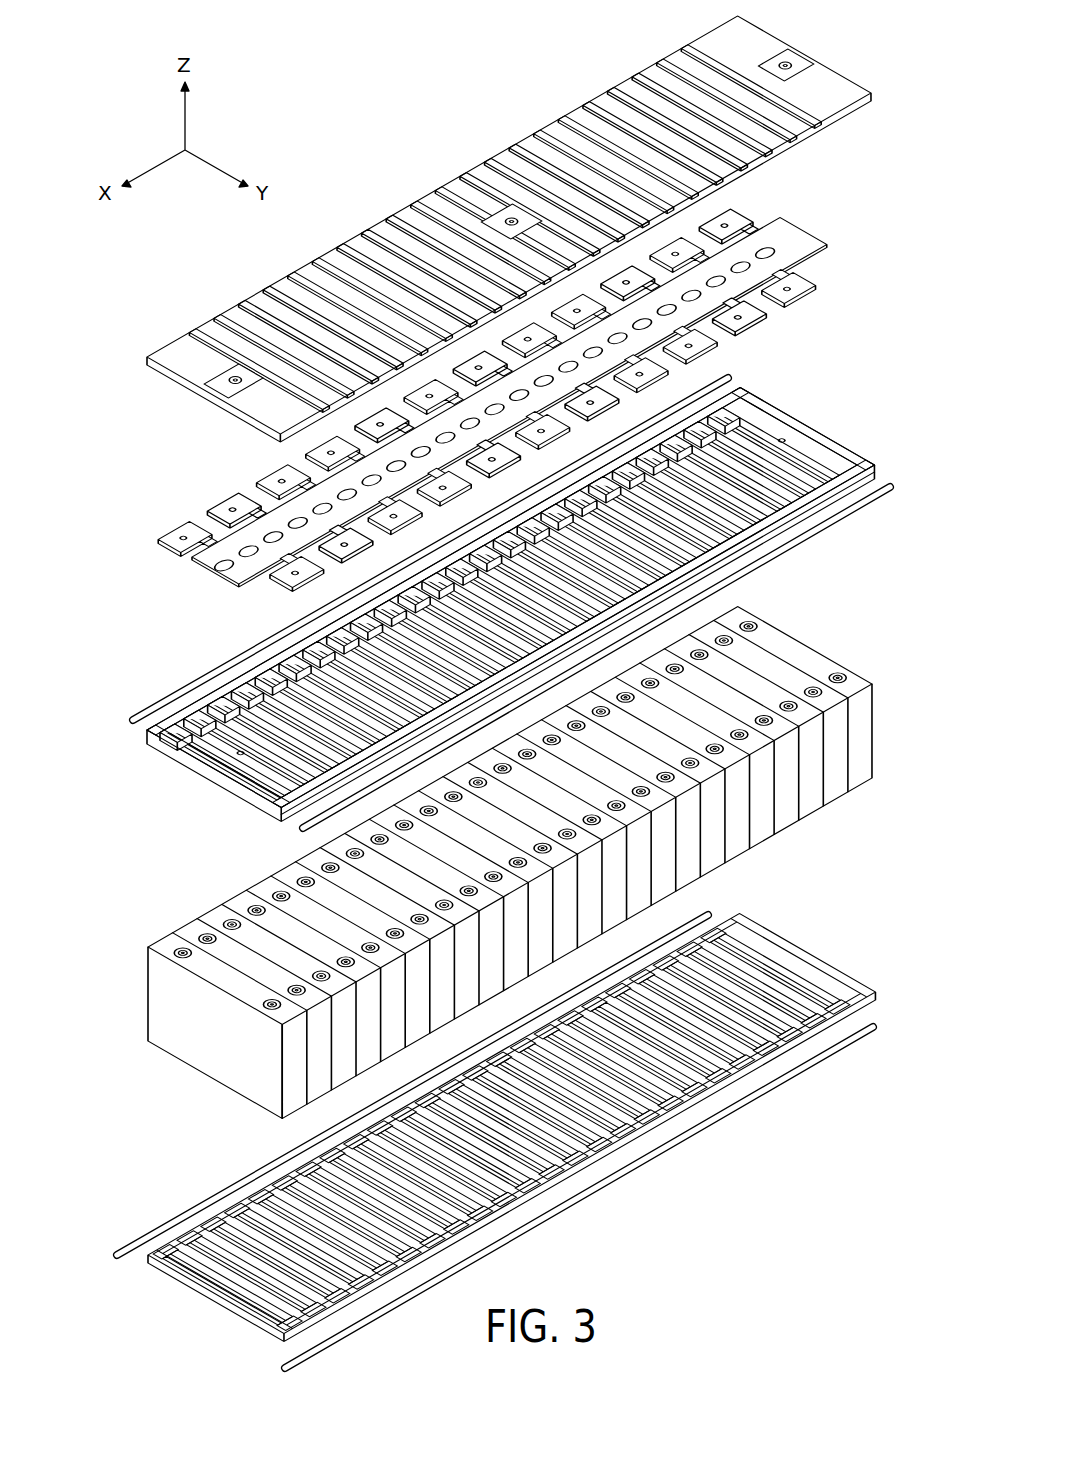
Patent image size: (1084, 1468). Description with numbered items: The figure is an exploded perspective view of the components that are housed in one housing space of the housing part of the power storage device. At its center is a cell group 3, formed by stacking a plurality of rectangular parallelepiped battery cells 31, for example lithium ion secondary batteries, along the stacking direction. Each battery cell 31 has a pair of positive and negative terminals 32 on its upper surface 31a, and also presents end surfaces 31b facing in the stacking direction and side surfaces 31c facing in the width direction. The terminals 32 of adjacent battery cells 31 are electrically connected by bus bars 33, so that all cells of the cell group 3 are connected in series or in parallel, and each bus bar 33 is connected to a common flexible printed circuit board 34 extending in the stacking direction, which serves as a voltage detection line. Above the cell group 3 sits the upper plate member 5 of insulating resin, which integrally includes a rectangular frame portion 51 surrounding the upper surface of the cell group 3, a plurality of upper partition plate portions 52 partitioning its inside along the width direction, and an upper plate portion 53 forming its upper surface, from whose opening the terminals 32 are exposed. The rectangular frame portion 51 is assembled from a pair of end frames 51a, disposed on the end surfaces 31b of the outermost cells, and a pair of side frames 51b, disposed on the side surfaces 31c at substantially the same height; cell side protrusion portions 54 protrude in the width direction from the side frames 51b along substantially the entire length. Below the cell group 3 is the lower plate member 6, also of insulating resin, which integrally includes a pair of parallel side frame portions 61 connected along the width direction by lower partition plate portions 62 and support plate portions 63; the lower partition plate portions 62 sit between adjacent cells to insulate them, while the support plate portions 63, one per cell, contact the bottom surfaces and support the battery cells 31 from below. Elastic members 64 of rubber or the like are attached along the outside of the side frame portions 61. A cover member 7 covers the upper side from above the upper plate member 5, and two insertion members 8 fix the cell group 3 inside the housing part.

The cell group 3 is at (507, 851).
The battery cell 31 is at (195, 933).
The upper surface 31a is at (800, 648).
The end surface 31b is at (245, 1080).
The side surface 31c is at (865, 742).
The terminal 32 is at (748, 625).
The bus bar 33 is at (838, 292).
The flexible printed circuit board 34 is at (788, 223).
The upper plate member 5 is at (500, 594).
The rectangular frame portion 51 is at (245, 805).
The end frame 51a is at (845, 447).
The side frame 51b is at (853, 487).
The upper partition plate portion 52 is at (752, 420).
The upper plate portion 53 is at (800, 445).
The cell side protrusion portion 54 is at (800, 522).
The lower plate member 6 is at (482, 1153).
The side frame portion 61 is at (155, 1270).
The lower partition plate portion 62 is at (210, 1262).
The support plate portion 63 is at (270, 1215).
The elastic member 64 is at (130, 1250).
The cover member 7 is at (166, 332).
The insertion member 8 is at (147, 712).